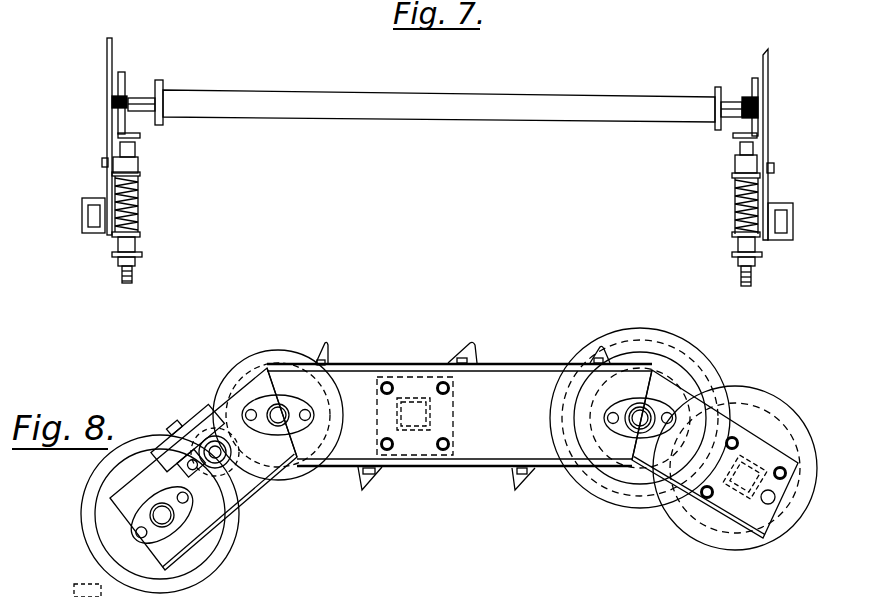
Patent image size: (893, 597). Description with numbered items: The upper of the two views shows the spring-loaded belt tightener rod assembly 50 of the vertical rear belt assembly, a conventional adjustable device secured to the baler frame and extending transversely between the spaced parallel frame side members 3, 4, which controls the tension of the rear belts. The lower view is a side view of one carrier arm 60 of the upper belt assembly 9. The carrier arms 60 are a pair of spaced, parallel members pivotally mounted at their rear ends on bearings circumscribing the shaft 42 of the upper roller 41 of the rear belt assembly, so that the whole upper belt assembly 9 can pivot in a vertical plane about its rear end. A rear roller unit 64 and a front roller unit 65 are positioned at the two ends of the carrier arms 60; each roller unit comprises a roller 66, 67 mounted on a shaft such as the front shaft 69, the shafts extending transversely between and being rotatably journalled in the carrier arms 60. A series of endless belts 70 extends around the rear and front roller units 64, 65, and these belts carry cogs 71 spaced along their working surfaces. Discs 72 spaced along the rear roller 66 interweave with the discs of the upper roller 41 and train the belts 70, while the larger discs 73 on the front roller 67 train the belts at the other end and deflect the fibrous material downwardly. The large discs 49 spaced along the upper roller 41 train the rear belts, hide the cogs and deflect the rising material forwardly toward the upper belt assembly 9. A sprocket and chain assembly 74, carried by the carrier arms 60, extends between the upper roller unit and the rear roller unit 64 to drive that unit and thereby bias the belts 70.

In FIG. 7, the side member 3 is at (768, 72).
In FIG. 7, the side member 4 is at (107, 52).
In FIG. 7, the spring-loaded belt tightener rod assembly 50 is at (536, 60).
In FIG. 8, the upper belt assembly 9 is at (453, 308).
In FIG. 8, the roller 41 is at (213, 544).
In FIG. 8, the shaft 42 is at (147, 515).
In FIG. 8, the discs 49 is at (213, 570).
In FIG. 8, the carrier arms 60 is at (562, 375).
In FIG. 8, the rear roller unit 64 is at (278, 360).
In FIG. 8, the front roller unit 65 is at (704, 382).
In FIG. 8, the roller 66 is at (316, 483).
In FIG. 8, the roller 67 is at (720, 412).
In FIG. 8, the shaft 69 is at (618, 487).
In FIG. 8, the endless belts 70 is at (413, 365).
In FIG. 8, the cogs 71 is at (472, 343).
In FIG. 8, the discs 72 is at (290, 360).
In FIG. 8, the discs 73 is at (700, 356).
In FIG. 8, the sprocket and chain assembly 74 is at (212, 403).